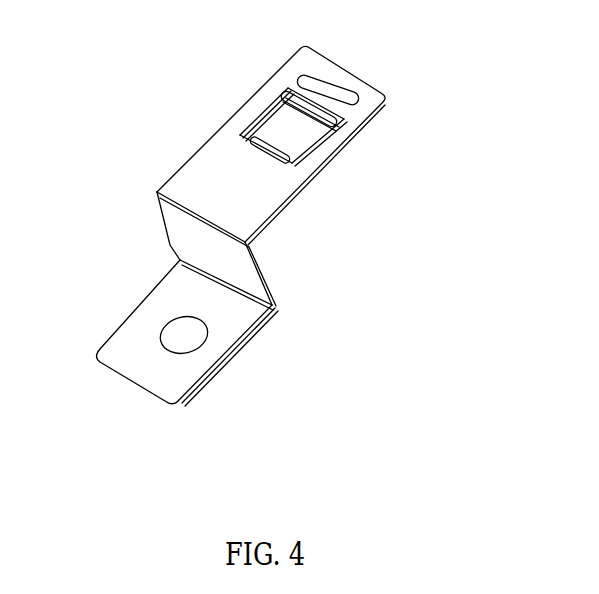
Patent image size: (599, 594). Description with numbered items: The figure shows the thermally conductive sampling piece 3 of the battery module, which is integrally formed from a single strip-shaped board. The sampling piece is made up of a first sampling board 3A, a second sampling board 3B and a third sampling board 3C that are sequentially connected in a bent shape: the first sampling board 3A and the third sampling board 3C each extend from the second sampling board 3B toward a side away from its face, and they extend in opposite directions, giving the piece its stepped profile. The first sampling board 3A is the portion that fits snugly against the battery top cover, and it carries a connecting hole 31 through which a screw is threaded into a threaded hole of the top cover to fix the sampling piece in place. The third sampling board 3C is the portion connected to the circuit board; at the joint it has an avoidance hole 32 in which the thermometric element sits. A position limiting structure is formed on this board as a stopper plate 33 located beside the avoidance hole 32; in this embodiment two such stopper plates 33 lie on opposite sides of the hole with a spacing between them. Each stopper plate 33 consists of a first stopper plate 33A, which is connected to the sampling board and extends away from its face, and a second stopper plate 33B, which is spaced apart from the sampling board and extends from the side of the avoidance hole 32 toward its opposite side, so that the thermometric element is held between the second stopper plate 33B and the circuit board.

The thermally conductive sampling piece 3 is at (127, 353).
The first sampling board 3A is at (146, 318).
The second sampling board 3B is at (171, 230).
The third sampling board 3C is at (215, 168).
The connecting hole 31 is at (183, 337).
The avoidance hole 32 is at (299, 141).
The stopper plate 33 is at (268, 94).
The first stopper plate 33A is at (330, 119).
The second stopper plate 33B is at (332, 122).